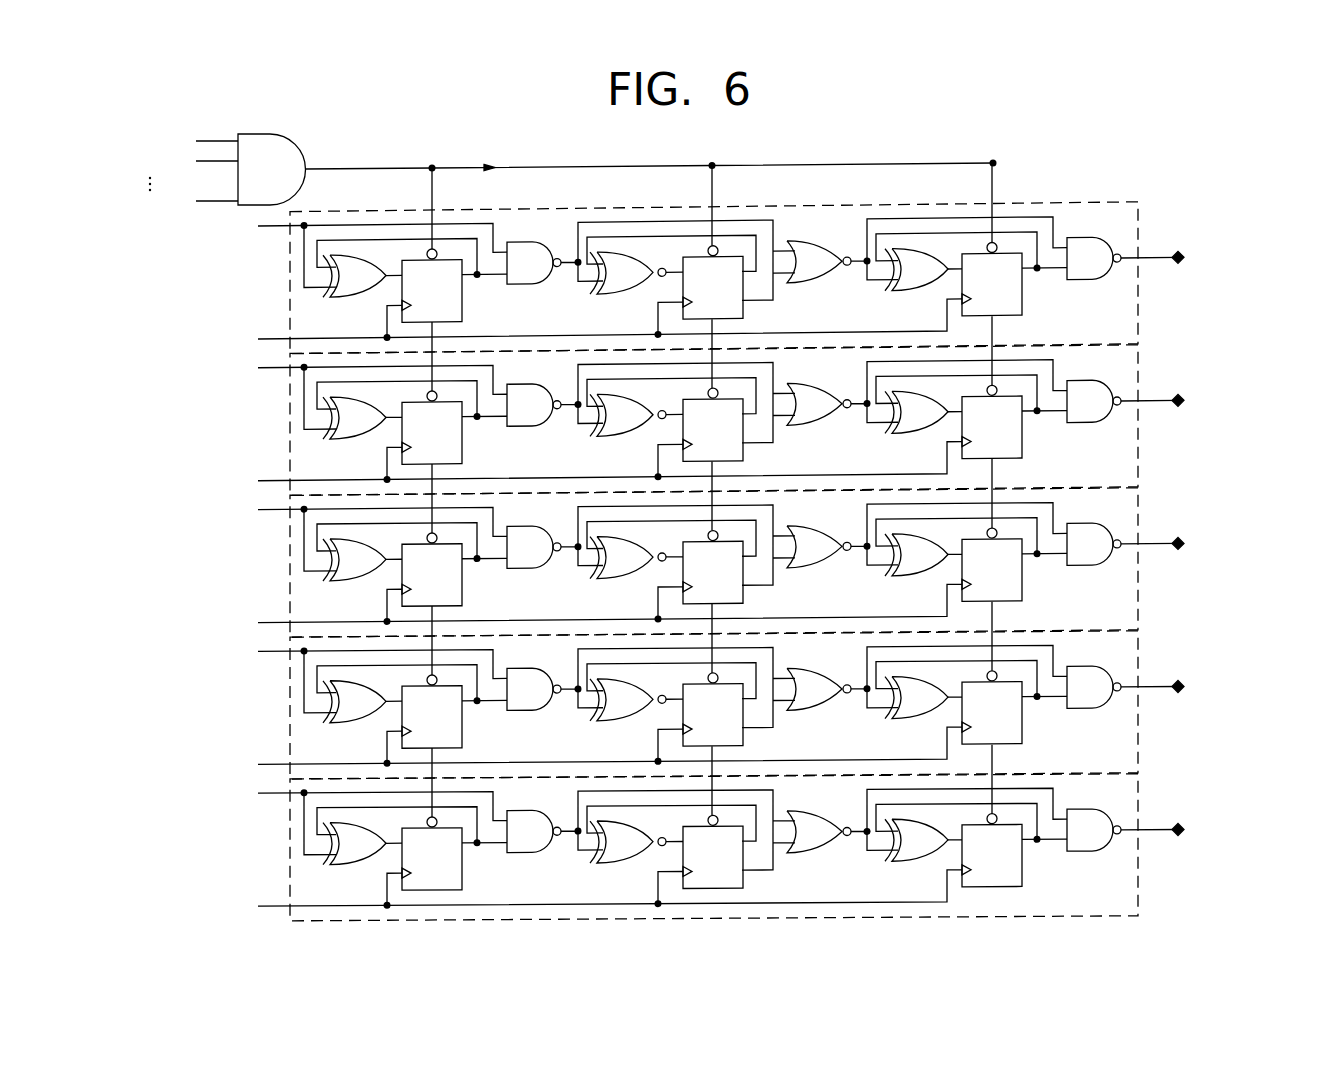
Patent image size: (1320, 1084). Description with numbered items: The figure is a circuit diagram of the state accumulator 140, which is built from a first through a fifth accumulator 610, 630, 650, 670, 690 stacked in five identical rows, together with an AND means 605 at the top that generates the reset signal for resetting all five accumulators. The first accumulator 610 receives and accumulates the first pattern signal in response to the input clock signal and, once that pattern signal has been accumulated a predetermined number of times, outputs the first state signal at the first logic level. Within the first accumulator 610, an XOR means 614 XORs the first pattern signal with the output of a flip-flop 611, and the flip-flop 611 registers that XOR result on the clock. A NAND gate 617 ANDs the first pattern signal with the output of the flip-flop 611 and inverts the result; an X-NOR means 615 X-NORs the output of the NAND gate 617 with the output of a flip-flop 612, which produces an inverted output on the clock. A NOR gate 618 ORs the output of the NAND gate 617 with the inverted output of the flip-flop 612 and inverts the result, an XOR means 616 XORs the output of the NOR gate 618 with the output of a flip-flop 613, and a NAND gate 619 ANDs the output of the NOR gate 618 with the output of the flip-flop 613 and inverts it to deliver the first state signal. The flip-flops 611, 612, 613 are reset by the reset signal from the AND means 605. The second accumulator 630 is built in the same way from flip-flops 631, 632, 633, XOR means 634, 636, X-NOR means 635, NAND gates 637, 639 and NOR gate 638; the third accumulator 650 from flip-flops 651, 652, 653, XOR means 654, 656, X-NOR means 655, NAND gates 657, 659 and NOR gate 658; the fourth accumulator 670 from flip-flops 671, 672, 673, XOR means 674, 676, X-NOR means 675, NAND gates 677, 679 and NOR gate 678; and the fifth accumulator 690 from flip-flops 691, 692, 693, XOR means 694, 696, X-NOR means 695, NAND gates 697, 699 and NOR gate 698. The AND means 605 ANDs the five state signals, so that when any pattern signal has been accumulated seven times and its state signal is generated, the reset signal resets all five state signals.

The state accumulator 140 is at (1204, 153).
The AND means 605 is at (305, 153).
The first accumulator 610 is at (1140, 240).
The flip-flop 611 is at (463, 303).
The flip-flop 612 is at (744, 316).
The flip-flop 613 is at (1023, 301).
The XOR means 614 is at (354, 276).
The X-NOR means 615 is at (628, 272).
The XOR means 616 is at (916, 269).
The NAND gate 617 is at (534, 263).
The NOR gate 618 is at (819, 261).
The NAND gate 619 is at (1094, 258).
The second accumulator 630 is at (745, 419).
The flip-flop 631 is at (461, 430).
The flip-flop 632 is at (742, 429).
The flip-flop 633 is at (1020, 425).
The XOR means 634 is at (354, 417).
The X-NOR means 635 is at (628, 415).
The XOR means 636 is at (916, 412).
The NAND gate 637 is at (534, 405).
The NOR gate 638 is at (819, 404).
The NAND gate 639 is at (1094, 401).
The third accumulator 650 is at (745, 562).
The flip-flop 651 is at (461, 572).
The flip-flop 652 is at (742, 572).
The flip-flop 653 is at (1020, 568).
The XOR means 654 is at (354, 559).
The X-NOR means 655 is at (628, 557).
The XOR means 656 is at (916, 554).
The NAND gate 657 is at (534, 547).
The NOR gate 658 is at (819, 546).
The NAND gate 659 is at (1094, 544).
The fourth accumulator 670 is at (745, 704).
The flip-flop 671 is at (461, 714).
The flip-flop 672 is at (742, 714).
The flip-flop 673 is at (1020, 711).
The XOR means 674 is at (354, 701).
The X-NOR means 675 is at (628, 699).
The XOR means 676 is at (916, 697).
The NAND gate 677 is at (534, 689).
The NOR gate 678 is at (819, 689).
The NAND gate 679 is at (1094, 687).
The fifth accumulator 690 is at (745, 846).
The flip-flop 691 is at (461, 856).
The flip-flop 692 is at (742, 857).
The flip-flop 693 is at (1020, 854).
The XOR means 694 is at (354, 843).
The X-NOR means 695 is at (628, 842).
The XOR means 696 is at (916, 840).
The NAND gate 697 is at (534, 831).
The NOR gate 698 is at (819, 831).
The NAND gate 699 is at (1094, 830).